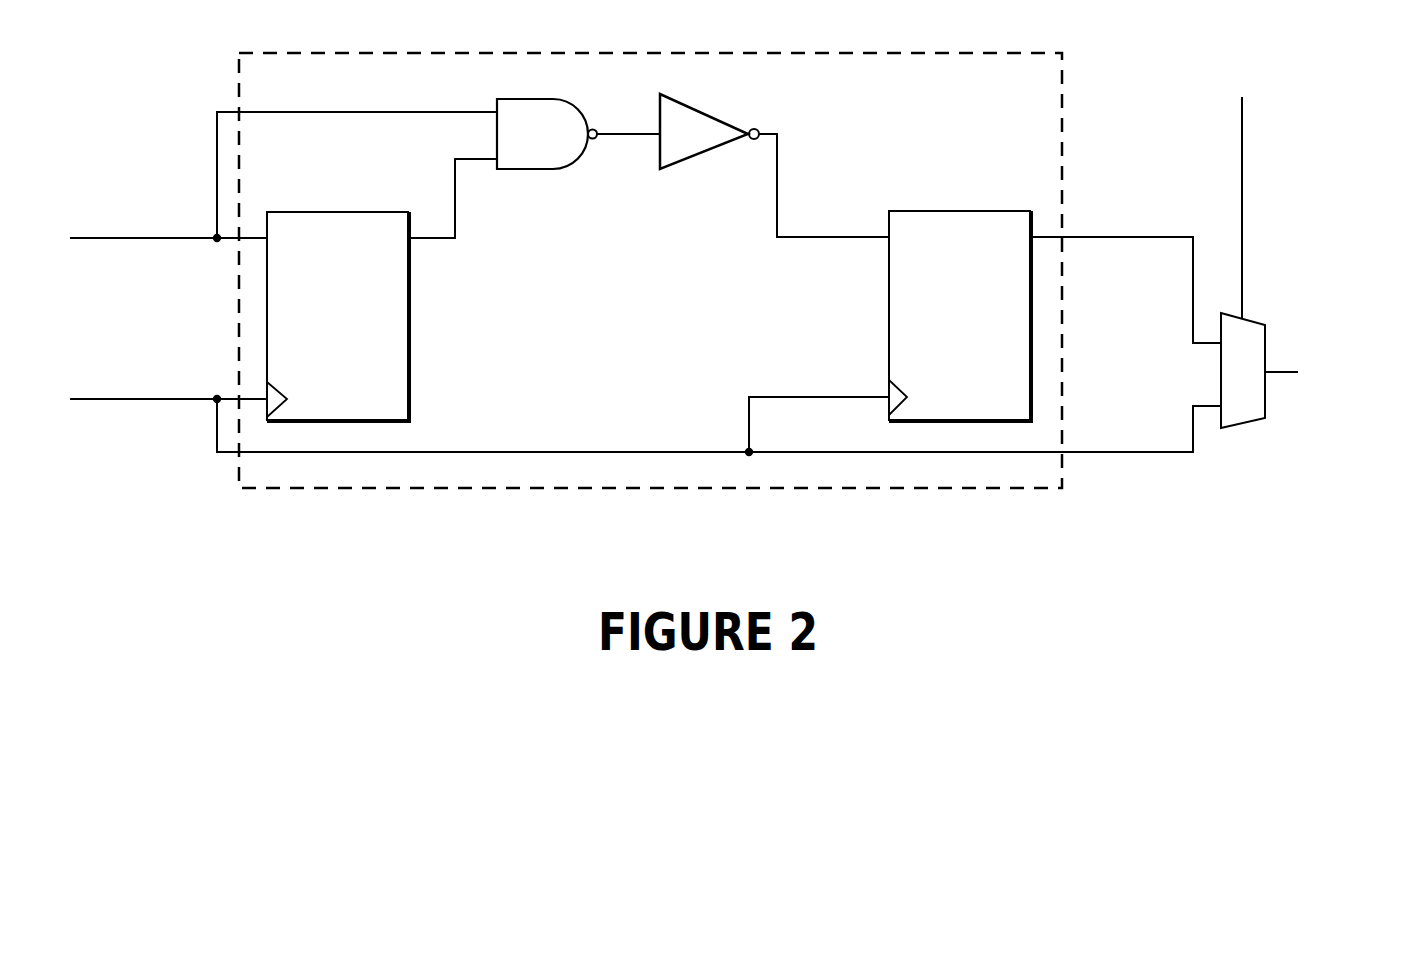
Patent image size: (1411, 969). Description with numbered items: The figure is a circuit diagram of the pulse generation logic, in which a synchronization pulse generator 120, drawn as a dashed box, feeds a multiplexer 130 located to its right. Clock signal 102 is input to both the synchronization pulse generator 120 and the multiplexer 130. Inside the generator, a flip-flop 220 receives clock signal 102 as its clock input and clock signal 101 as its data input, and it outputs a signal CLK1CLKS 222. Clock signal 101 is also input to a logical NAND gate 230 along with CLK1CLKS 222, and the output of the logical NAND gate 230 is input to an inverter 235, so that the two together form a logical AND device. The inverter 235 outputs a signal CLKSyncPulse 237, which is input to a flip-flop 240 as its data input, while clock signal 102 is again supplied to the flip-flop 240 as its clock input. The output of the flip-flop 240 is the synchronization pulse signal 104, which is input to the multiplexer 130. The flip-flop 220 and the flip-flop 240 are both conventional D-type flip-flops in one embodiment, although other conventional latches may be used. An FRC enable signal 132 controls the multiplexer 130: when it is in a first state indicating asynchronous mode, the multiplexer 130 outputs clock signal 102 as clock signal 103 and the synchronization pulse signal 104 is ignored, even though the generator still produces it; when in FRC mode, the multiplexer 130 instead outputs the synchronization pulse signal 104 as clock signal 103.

The clock signal 101 is at (283, 177).
The clock signal 102 is at (645, 415).
The clock signal 103 is at (1333, 389).
The synchronization pulse signal 104 is at (1126, 261).
The synchronization pulse generator 120 is at (357, 490).
The multiplexer 130 is at (1265, 338).
The FRC enable signal 132 is at (1241, 164).
The flip-flop 220 is at (311, 355).
The CLK1CLKS signal 222 is at (500, 213).
The logical NAND gate 230 is at (558, 146).
The inverter 235 is at (705, 144).
The CLKSyncPulse signal 237 is at (779, 214).
The flip-flop 240 is at (937, 355).